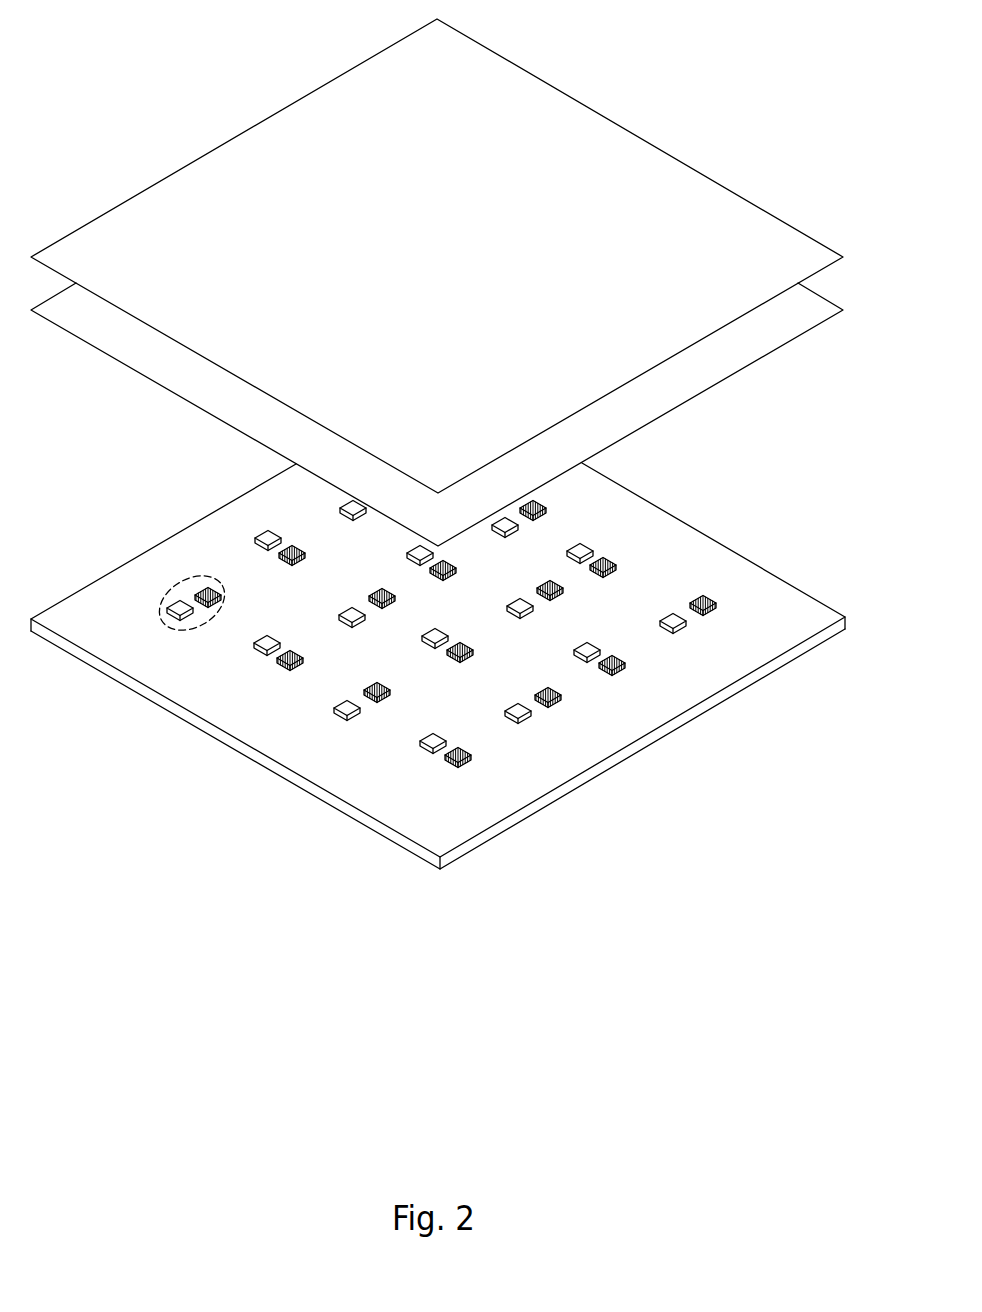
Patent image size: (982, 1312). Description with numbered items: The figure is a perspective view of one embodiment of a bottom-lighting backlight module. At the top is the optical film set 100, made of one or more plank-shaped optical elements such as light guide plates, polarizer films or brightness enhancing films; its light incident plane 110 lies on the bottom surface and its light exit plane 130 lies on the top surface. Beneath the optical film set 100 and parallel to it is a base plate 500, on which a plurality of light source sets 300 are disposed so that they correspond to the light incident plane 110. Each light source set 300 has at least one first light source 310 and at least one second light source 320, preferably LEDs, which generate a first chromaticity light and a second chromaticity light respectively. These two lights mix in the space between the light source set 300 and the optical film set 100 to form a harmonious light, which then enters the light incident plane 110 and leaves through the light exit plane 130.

The optical film set 100 is at (464, 282).
The light incident plane 110 is at (693, 397).
The light exit plane 130 is at (555, 165).
The light source set 300 is at (503, 661).
The first light source 310 is at (253, 642).
The second light source 320 is at (277, 660).
The base plate 500 is at (677, 682).